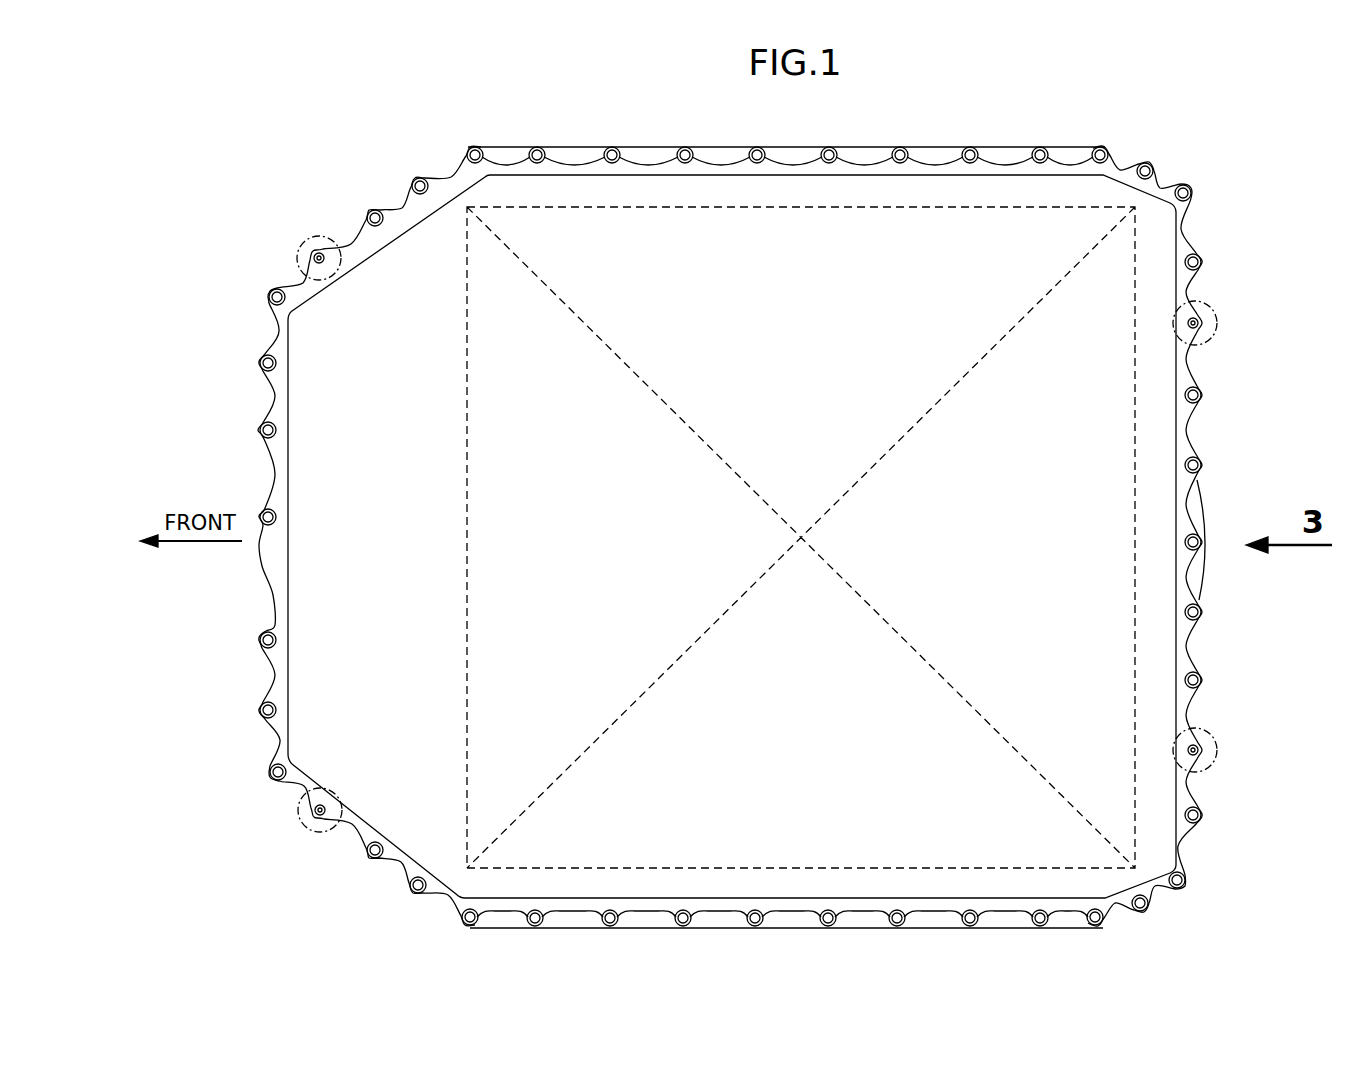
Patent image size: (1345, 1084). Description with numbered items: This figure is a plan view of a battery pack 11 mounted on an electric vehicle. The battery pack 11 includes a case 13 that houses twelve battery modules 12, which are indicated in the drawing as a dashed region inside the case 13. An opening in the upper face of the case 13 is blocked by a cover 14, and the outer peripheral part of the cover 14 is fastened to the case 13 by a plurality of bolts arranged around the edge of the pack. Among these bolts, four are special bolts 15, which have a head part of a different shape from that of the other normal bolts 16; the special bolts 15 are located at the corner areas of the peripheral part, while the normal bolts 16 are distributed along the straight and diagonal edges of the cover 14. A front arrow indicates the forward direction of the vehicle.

The battery pack 11 is at (768, 140).
The battery modules 12 is at (468, 420).
The case 13 is at (1207, 565).
The cover 14 is at (933, 172).
The special bolts 15 is at (319, 254).
The normal bolts 16 is at (472, 152).